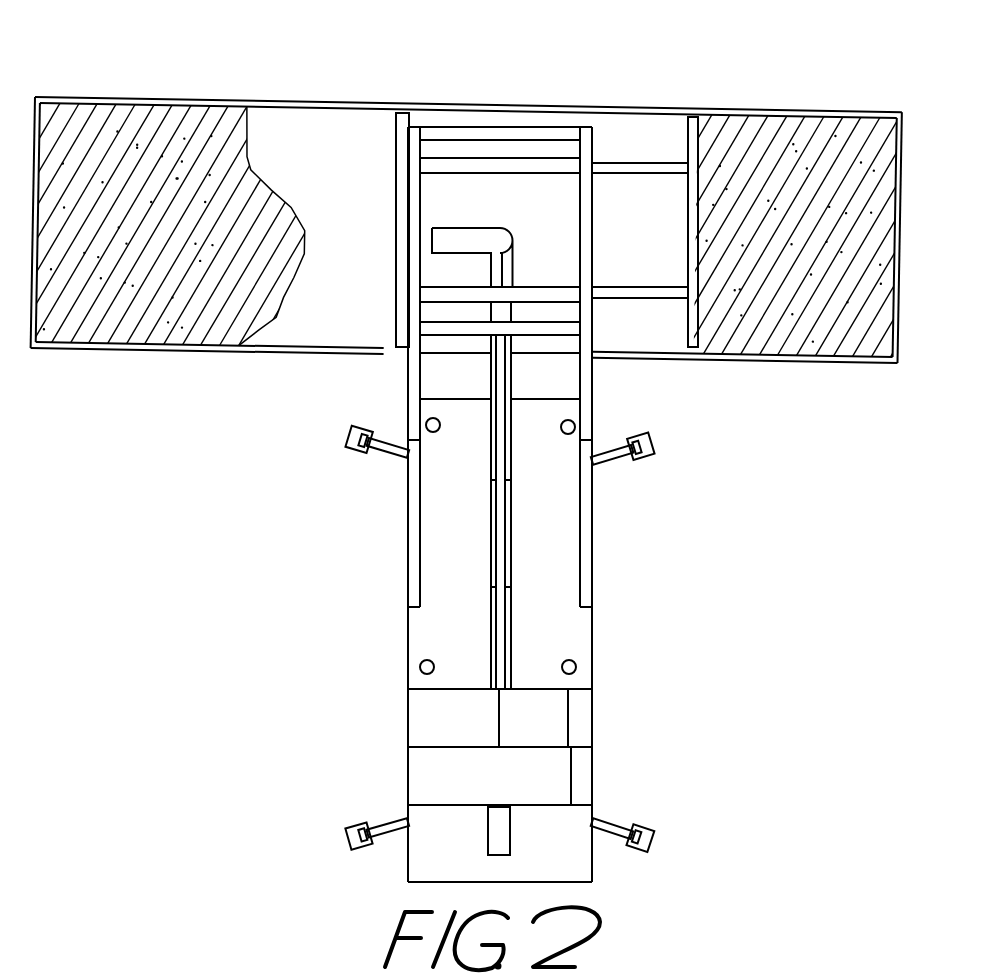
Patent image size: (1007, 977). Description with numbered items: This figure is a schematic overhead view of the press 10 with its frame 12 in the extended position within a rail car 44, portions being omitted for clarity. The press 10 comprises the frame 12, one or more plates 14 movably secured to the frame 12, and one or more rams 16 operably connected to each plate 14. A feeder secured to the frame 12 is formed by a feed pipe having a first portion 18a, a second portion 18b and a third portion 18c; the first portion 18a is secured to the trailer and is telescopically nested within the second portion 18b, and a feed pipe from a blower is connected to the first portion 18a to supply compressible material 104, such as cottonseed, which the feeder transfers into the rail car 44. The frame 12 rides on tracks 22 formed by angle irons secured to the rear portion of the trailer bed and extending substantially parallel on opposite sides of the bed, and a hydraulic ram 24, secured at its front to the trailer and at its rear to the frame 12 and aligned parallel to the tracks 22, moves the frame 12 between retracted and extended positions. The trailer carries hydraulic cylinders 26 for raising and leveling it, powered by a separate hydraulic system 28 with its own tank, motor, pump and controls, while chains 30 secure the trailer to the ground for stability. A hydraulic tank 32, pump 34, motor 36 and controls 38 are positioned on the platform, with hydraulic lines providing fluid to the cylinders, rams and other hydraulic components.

The press 10 is at (236, 607).
The frame 12 is at (574, 150).
The plate 14 is at (402, 128).
The ram 16 is at (474, 170).
The first portion of the feed pipe 18a is at (512, 505).
The second portion of the feed pipe 18b is at (511, 377).
The third portion of the feed pipe 18c is at (492, 238).
The track 22 is at (415, 540).
The ram 24 is at (500, 376).
The hydraulic cylinder 26 is at (426, 425).
The hydraulic system 28 is at (587, 727).
The chain 30 is at (378, 455).
The hydraulic tank 32 is at (524, 782).
The pump 34 is at (420, 719).
The motor 36 is at (567, 722).
The controls 38 is at (582, 775).
The rail car 44 is at (327, 96).
The compressible material 104 is at (503, 229).